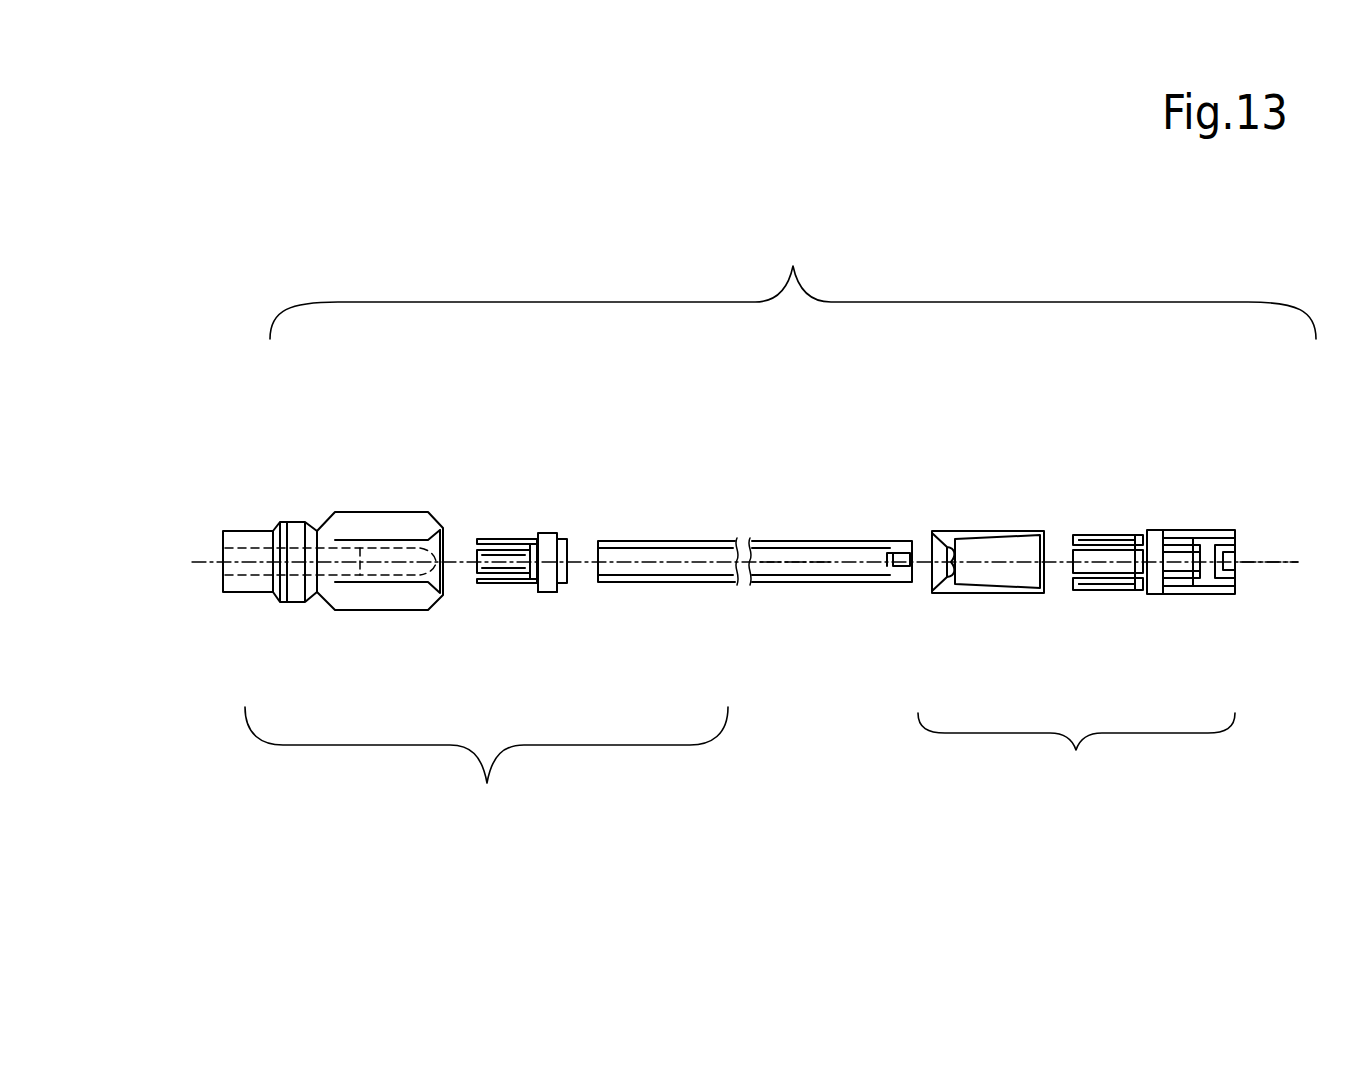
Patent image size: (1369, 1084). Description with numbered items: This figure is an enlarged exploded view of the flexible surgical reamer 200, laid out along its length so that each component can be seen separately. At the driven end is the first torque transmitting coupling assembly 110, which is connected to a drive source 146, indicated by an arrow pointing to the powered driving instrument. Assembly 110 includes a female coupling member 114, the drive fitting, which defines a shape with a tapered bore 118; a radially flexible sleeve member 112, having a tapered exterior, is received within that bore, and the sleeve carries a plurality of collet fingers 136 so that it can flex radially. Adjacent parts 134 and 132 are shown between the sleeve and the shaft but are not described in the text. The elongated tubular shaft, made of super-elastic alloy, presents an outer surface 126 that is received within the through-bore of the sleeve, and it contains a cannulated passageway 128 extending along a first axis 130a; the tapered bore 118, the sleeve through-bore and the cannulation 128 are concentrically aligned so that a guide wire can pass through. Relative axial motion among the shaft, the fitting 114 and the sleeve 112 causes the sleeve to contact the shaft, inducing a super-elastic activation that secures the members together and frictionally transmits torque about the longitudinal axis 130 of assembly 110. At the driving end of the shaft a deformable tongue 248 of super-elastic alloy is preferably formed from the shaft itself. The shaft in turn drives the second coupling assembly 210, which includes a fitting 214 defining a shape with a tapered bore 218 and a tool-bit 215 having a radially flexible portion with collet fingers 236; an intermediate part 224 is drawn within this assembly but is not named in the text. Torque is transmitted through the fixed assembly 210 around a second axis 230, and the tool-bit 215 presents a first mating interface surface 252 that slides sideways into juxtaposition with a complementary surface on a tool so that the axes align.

The flexible surgical reamer 200 is at (793, 274).
The torque transmitting coupling assembly 110 is at (486, 773).
The second coupling assembly 210 is at (1076, 760).
The drive source 146 is at (250, 531).
The female coupling member 114 is at (360, 528).
The tapered bore 118 is at (388, 560).
The collet fingers 136 is at (490, 539).
The clip flange 134 is at (517, 537).
The ring 132 is at (548, 532).
The radially flexible sleeve member 112 is at (536, 606).
The longitudinal axis 130 is at (455, 563).
The outer surface 126 is at (682, 542).
The cannulated passageway 128 is at (633, 567).
The first axis 130a is at (792, 560).
The deformable tongue 248 is at (903, 542).
The fitting 214 is at (963, 505).
The tapered bore 218 is at (1010, 542).
The spring contact 224 is at (1080, 545).
The collet fingers 236 is at (1083, 585).
The tool-bit 215 is at (1189, 508).
The first mating interface surface 252 is at (1236, 556).
The second axis 230 is at (1272, 563).